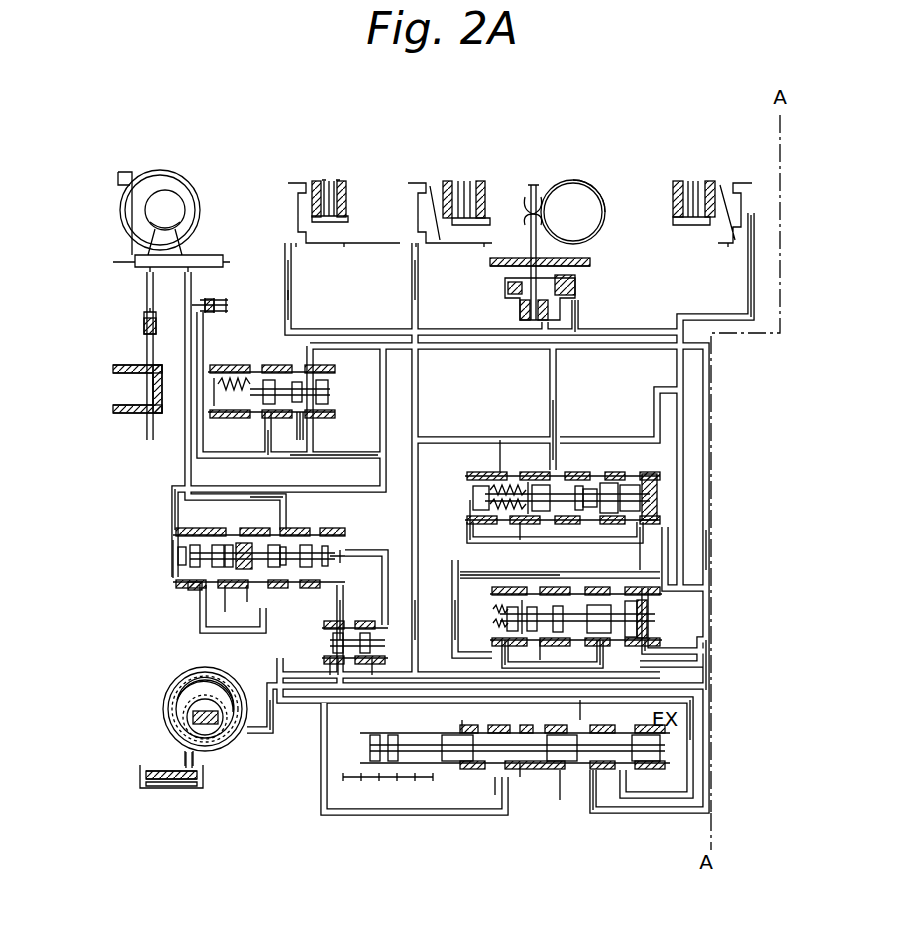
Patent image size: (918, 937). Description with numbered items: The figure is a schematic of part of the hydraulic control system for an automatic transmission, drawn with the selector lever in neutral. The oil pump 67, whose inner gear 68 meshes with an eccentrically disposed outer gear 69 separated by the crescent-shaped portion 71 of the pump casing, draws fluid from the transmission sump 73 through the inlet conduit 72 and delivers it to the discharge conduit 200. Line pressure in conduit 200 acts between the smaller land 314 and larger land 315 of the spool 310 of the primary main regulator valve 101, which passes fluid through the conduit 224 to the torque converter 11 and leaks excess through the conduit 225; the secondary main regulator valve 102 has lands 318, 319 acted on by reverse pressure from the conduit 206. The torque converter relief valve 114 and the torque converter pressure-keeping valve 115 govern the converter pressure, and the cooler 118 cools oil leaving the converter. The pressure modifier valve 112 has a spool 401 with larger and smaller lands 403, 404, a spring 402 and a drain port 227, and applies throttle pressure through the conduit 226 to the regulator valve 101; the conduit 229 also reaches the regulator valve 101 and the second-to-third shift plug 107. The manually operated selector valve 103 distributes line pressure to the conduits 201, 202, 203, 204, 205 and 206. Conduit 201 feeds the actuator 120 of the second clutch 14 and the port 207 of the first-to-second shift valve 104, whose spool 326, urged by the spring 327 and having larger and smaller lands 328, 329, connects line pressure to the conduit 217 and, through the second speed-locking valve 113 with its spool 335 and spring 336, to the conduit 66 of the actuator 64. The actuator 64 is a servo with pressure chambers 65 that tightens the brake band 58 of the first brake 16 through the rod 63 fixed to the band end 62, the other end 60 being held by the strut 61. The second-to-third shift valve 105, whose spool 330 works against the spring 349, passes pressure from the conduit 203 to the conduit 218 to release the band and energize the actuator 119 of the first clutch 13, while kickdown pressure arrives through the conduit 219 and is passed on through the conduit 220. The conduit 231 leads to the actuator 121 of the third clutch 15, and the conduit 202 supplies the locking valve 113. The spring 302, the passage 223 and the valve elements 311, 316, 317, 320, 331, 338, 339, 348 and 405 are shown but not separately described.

The torque converter 11 is at (185, 180).
The first clutch 13 is at (325, 179).
The second clutch 14 is at (452, 178).
The third clutch 15 is at (695, 176).
The first brake 16 is at (578, 186).
The brake band 58 is at (603, 200).
The one end of the band 60 is at (524, 200).
The strut 61 is at (535, 183).
The other end of the band 62 is at (525, 220).
The rod 63 is at (522, 318).
The actuator 64 is at (512, 262).
The hydraulic pressure chamber 65 is at (575, 285).
The conduit of the actuator 66 is at (508, 303).
The pump 67 is at (168, 688).
The inner gear 68 is at (215, 700).
The outer gear 69 is at (205, 676).
The crescent-shaped portion 71 is at (178, 702).
The inlet conduit 72 is at (183, 756).
The transmission sump 73 is at (172, 792).
The primary main regulator valve 101 is at (340, 545).
The secondary main regulator valve 102 is at (170, 554).
The manually operated selector valve 103 is at (660, 750).
The first-to-second shift valve 104 is at (495, 616).
The second-to-third shift valve 105 is at (660, 496).
The second-to-third shift plug 107 is at (468, 494).
The pressure modifier valve 112 is at (330, 392).
The second speed-locking valve 113 is at (322, 638).
The torque converter relief valve 114 is at (212, 297).
The torque converter pressure-keeping valve 115 is at (142, 320).
The cooler 118 is at (124, 388).
The hydraulically operated actuator 119 is at (285, 215).
The hydraulically operated actuator 120 is at (398, 232).
The hydraulically operated actuator 121 is at (748, 205).
The discharge conduit 200 is at (338, 620).
The conduit 201 is at (418, 270).
The conduit 202 is at (328, 668).
The conduit 203 is at (464, 718).
The conduit 204 is at (578, 805).
The conduit 205 is at (596, 650).
The conduit 206 is at (600, 800).
The port 207 is at (508, 645).
The conduit 217 is at (530, 575).
The conduit 218 is at (291, 296).
The conduit 219 is at (497, 468).
The conduit 220 is at (525, 542).
The throttle pressure passage 223 is at (304, 436).
The conduit 224 is at (276, 502).
The conduit 225 is at (228, 588).
The conduit 226 is at (268, 457).
The drain port 227 is at (296, 428).
The conduit 229 is at (172, 498).
The conduit 231 is at (748, 266).
The spring 302 is at (708, 549).
The regulator valve spool 310 is at (256, 546).
The valve land 311 is at (228, 543).
The smaller land 314 is at (344, 578).
The larger land 315 is at (326, 543).
The valve land 316 is at (284, 544).
The valve port 317 is at (249, 590).
The larger land 318 is at (190, 588).
The land 319 is at (180, 558).
The manual valve land 320 is at (534, 785).
The spool 326 is at (648, 644).
The spring 327 is at (520, 630).
The larger land 328 is at (652, 622).
The smaller land 329 is at (648, 612).
The spool 330 is at (600, 475).
The valve land 331 is at (632, 474).
The spool 335 is at (340, 680).
The spring 336 is at (374, 680).
The spring 338 is at (500, 604).
The spring 339 is at (500, 616).
The spring 348 is at (478, 484).
The spring 349 is at (525, 480).
The control valve spool 401 is at (250, 410).
The spring 402 is at (226, 380).
The larger land 403 is at (330, 386).
The smaller land 404 is at (269, 378).
The spring seat 405 is at (238, 376).